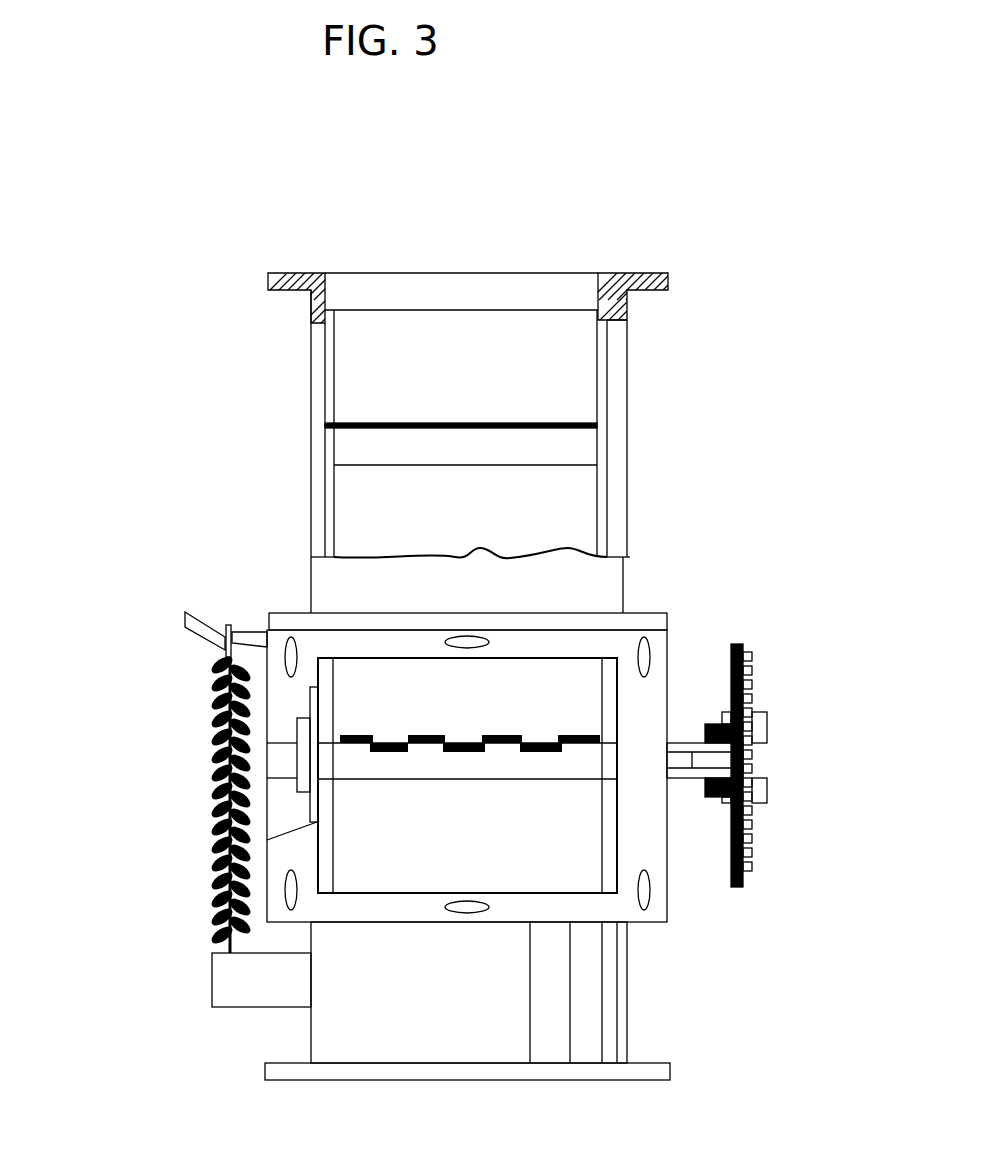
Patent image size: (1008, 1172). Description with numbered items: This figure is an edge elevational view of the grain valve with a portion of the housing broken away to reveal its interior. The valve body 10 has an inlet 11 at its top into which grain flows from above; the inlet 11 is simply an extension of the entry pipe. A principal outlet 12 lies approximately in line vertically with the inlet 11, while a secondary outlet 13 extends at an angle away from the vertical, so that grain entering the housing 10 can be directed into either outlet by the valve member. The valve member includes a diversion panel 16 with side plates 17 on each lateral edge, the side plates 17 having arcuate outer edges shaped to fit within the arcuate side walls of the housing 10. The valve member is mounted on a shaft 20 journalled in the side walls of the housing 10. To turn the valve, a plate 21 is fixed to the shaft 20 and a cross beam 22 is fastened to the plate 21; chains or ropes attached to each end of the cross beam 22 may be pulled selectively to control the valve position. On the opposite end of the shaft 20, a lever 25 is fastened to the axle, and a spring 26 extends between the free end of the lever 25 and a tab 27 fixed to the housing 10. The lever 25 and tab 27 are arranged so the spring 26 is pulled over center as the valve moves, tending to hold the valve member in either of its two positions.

The valve body 10 is at (607, 990).
The inlet 11 is at (562, 272).
The principal outlet 12 is at (617, 1070).
The secondary outlet 13 is at (657, 643).
The diversion panel 16 is at (457, 505).
The side plates 17 is at (328, 362).
The shaft 20 is at (692, 777).
The plate 21 is at (730, 670).
The cross beam 22 is at (753, 680).
The lever 25 is at (247, 630).
The spring 26 is at (217, 713).
The tab 27 is at (227, 965).